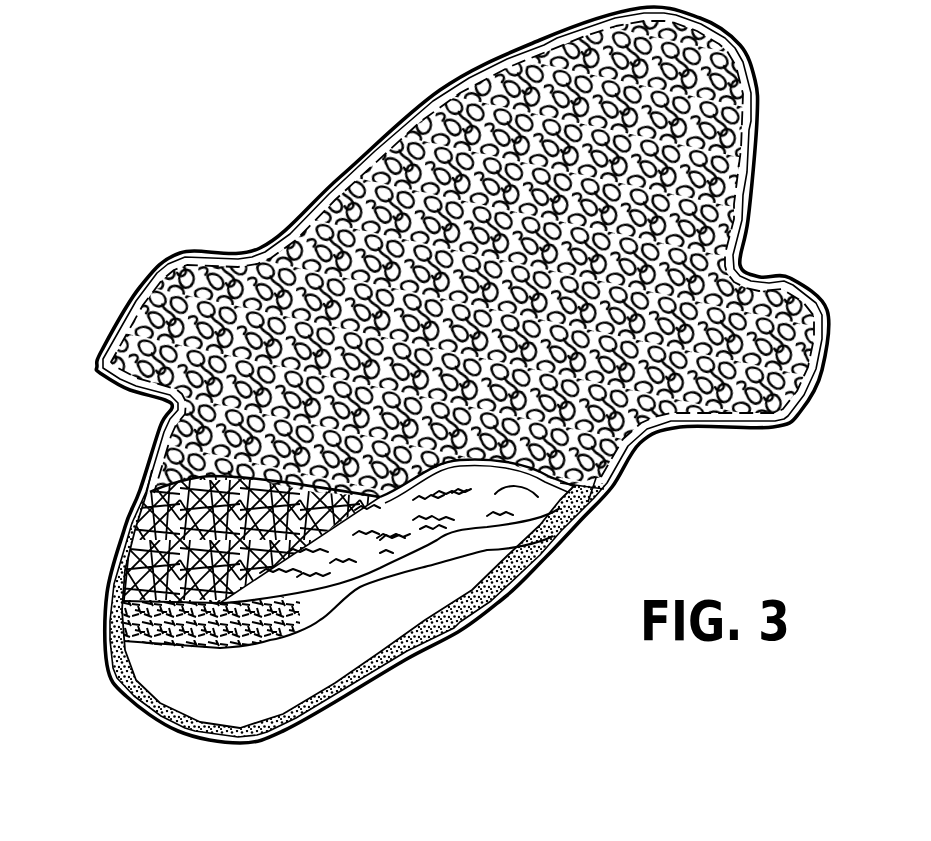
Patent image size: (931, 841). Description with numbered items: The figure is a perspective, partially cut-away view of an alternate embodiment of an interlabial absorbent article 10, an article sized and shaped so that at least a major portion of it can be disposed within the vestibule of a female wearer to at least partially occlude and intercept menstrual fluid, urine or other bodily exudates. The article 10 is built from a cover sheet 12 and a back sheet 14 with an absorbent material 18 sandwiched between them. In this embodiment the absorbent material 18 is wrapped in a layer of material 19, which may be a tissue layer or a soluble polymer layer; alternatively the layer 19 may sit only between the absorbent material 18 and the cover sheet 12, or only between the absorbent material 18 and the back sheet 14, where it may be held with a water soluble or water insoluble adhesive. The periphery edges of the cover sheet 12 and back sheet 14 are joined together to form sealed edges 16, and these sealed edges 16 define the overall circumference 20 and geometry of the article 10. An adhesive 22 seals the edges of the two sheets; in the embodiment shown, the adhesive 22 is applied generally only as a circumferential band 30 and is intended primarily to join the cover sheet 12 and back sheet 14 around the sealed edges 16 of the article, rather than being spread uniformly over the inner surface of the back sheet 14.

The interlabial absorbent article 10 is at (215, 182).
The cover sheet 12 is at (735, 119).
The back sheet 14 is at (300, 676).
The sealed edges 16 is at (742, 160).
The absorbent material 18 is at (562, 512).
The layer of material 19 is at (147, 490).
The circumference 20 is at (758, 206).
The adhesive 22 is at (460, 630).
The circumferential band 30 is at (124, 602).